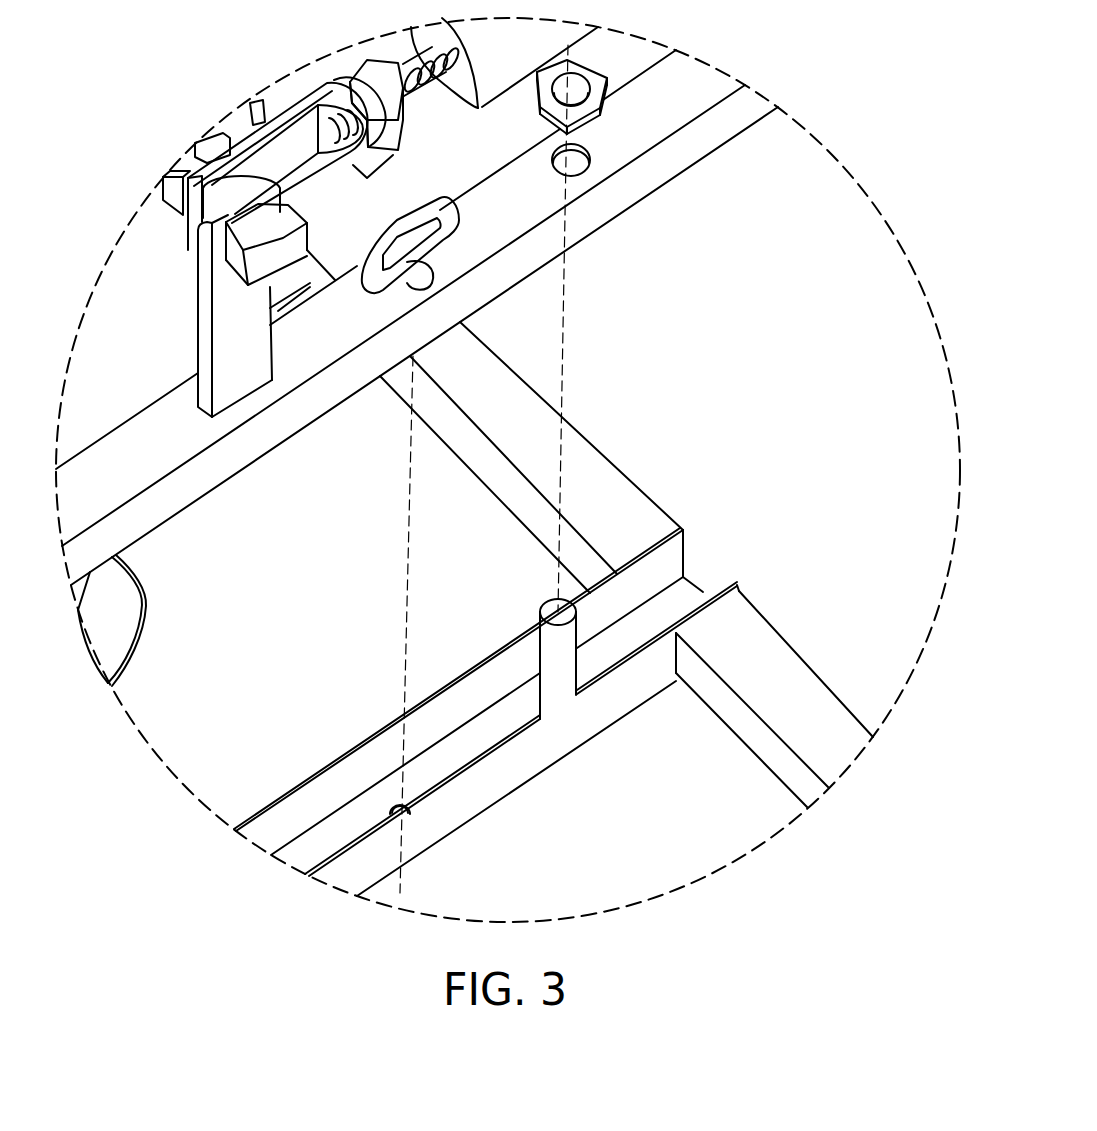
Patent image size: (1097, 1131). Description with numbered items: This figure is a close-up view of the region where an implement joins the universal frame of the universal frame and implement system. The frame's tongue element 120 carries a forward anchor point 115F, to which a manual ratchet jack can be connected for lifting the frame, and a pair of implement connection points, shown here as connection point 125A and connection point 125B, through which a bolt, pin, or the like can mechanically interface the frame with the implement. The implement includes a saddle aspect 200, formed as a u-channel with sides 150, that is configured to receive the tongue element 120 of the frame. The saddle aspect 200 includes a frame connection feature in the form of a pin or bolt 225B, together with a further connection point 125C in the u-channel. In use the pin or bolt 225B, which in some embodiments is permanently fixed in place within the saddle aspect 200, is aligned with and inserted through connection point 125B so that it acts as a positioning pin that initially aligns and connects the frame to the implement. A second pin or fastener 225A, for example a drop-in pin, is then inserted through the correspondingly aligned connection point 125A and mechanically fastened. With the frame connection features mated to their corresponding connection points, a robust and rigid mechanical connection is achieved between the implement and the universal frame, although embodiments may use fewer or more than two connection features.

The tongue element 120 is at (695, 102).
The forward anchor point 115F is at (227, 338).
The connection point 125A is at (431, 272).
The connection point 125B is at (577, 177).
The connection point 125C is at (393, 803).
The sides 150 is at (308, 778).
The saddle aspect 200 is at (702, 592).
The second pin or fastener 225A is at (370, 292).
The pin or bolt 225B is at (541, 612).